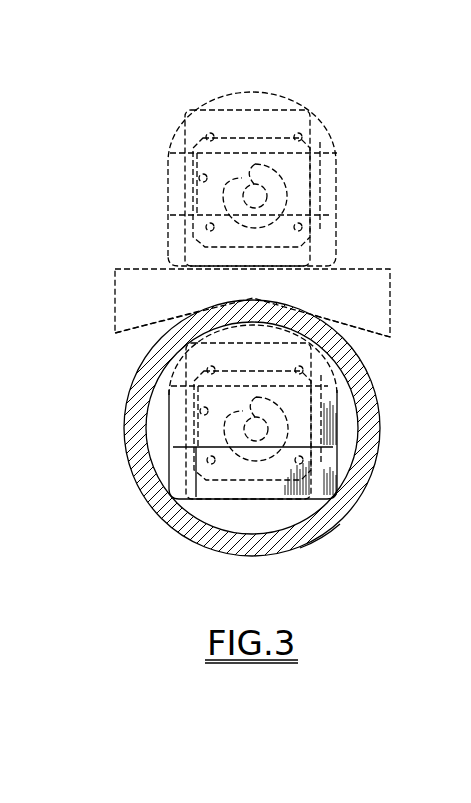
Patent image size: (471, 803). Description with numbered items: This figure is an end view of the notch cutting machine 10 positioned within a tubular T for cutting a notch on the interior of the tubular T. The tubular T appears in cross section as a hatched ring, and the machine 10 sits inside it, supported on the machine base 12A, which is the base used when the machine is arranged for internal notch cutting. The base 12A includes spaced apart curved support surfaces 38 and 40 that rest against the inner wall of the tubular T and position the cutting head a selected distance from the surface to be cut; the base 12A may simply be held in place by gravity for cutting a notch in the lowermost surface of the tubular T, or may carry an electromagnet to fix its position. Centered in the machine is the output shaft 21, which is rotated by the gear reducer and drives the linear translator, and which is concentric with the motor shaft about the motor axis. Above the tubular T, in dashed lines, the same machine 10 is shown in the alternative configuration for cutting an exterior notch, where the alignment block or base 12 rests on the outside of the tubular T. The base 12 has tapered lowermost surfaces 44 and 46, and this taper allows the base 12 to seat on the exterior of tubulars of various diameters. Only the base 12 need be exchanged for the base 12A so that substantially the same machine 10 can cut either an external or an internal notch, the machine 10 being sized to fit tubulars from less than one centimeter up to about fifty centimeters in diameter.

The notch cutting machine 10 is at (219, 468).
The alignment block or base 12 is at (357, 290).
The machine base 12A is at (361, 468).
The output shaft 21 is at (195, 461).
The curved support surface 38 is at (236, 491).
The curved support surface 40 is at (348, 512).
The lowermost surface 44 is at (133, 334).
The lowermost surface 46 is at (368, 335).
The tubular T is at (363, 440).